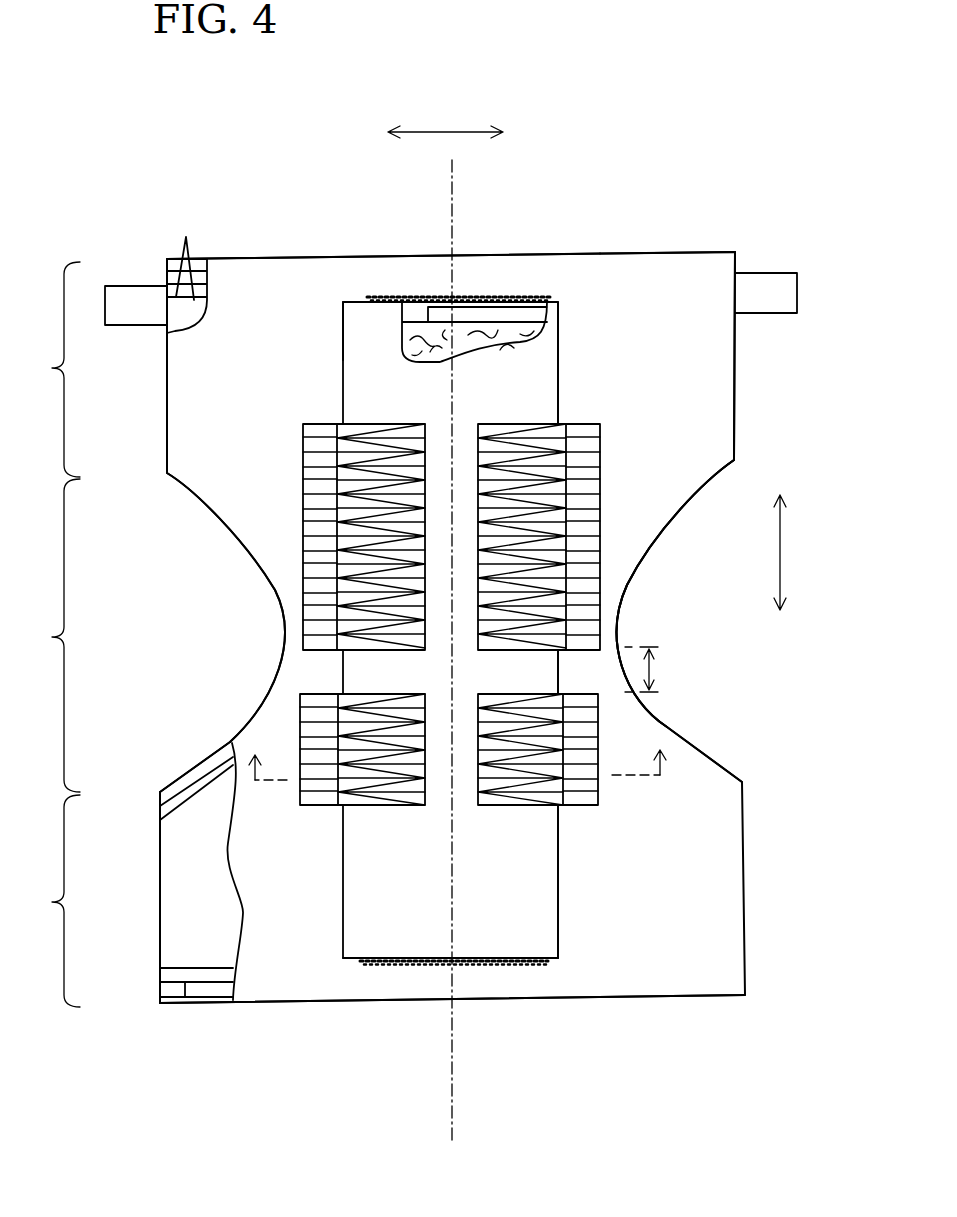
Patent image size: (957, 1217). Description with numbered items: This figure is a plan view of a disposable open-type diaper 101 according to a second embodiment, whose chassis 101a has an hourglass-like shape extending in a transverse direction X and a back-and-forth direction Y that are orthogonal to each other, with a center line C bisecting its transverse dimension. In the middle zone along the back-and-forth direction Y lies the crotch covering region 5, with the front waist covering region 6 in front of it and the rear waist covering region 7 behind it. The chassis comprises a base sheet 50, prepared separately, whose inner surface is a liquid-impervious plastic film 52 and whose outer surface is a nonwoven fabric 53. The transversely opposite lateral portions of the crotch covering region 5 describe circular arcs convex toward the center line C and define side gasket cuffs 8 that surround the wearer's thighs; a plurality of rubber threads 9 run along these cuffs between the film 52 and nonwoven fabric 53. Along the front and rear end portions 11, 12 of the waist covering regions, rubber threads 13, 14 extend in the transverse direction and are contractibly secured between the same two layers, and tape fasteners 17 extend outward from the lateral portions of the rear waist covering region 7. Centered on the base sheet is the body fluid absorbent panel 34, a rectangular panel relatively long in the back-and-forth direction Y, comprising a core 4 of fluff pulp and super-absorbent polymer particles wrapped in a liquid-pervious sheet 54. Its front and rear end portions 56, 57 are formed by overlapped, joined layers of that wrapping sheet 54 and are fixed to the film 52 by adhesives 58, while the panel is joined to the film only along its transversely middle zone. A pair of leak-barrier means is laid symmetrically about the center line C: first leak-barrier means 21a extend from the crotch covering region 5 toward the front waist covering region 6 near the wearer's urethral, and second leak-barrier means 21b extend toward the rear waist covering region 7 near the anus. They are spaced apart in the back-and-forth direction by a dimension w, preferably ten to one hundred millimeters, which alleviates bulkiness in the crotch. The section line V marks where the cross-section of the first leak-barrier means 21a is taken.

The diaper 101 is at (642, 138).
The chassis 101a is at (673, 238).
The rear end portion 12 is at (277, 278).
The front end portion 11 is at (280, 993).
The tape fasteners 17 is at (138, 295).
The rubber threads 14 is at (189, 267).
The base sheet 50 is at (745, 421).
The rear waist covering region 7 is at (55, 369).
The crotch covering region 5 is at (52, 635).
The front waist covering region 6 is at (49, 901).
The liquid-pervious sheet 54 is at (362, 856).
The body fluid absorbent panel 34 is at (571, 864).
The front end portion 56 is at (490, 938).
The rear end portion 57 is at (383, 318).
The adhesives 58 is at (437, 300).
The liquid-absorbent core 4 is at (468, 350).
The center line C is at (452, 199).
The transverse direction X is at (440, 132).
The back-and-forth direction Y is at (782, 560).
The second leak-barrier means 21b is at (609, 391).
The first leak-barrier means 21a is at (629, 743).
The side gasket cuffs 8 is at (650, 510).
The dimension W w is at (651, 668).
The line V- V is at (470, 763).
The rubber threads 9 is at (195, 782).
The liquid-impervious plastic film 52 is at (245, 852).
The nonwoven fabric 53 is at (172, 886).
The rubber threads 13 is at (197, 996).